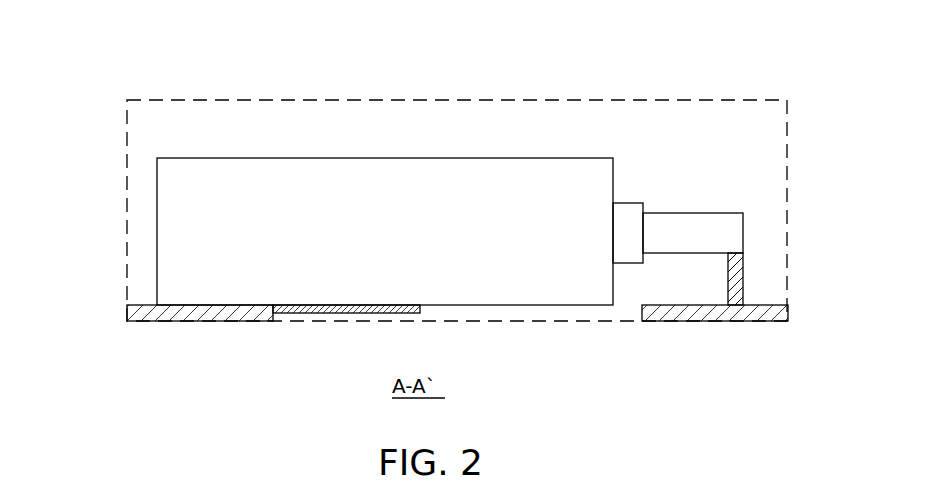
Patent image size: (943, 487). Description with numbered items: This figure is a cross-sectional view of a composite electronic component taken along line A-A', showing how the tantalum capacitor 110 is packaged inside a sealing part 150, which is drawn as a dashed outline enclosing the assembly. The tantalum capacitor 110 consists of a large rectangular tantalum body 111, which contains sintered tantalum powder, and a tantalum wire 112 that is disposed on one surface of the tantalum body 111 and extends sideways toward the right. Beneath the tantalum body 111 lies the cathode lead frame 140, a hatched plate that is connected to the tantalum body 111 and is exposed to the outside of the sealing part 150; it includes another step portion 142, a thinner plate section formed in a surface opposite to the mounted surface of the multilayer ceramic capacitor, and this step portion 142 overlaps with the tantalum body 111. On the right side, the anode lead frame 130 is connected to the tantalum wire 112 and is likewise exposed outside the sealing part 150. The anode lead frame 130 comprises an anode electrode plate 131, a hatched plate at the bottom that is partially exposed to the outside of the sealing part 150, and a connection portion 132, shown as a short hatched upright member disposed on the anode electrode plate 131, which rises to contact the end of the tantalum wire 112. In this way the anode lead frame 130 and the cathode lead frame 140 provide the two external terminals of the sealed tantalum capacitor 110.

The sealing part 150 is at (185, 100).
The tantalum capacitor 110 is at (335, 228).
The tantalum body 111 is at (177, 238).
The tantalum wire 112 is at (680, 225).
The anode lead frame 130 is at (704, 354).
The anode electrode plate 131 is at (667, 313).
The connection portion 132 is at (735, 250).
The cathode lead frame 140 is at (218, 328).
The step portion 142 is at (340, 313).